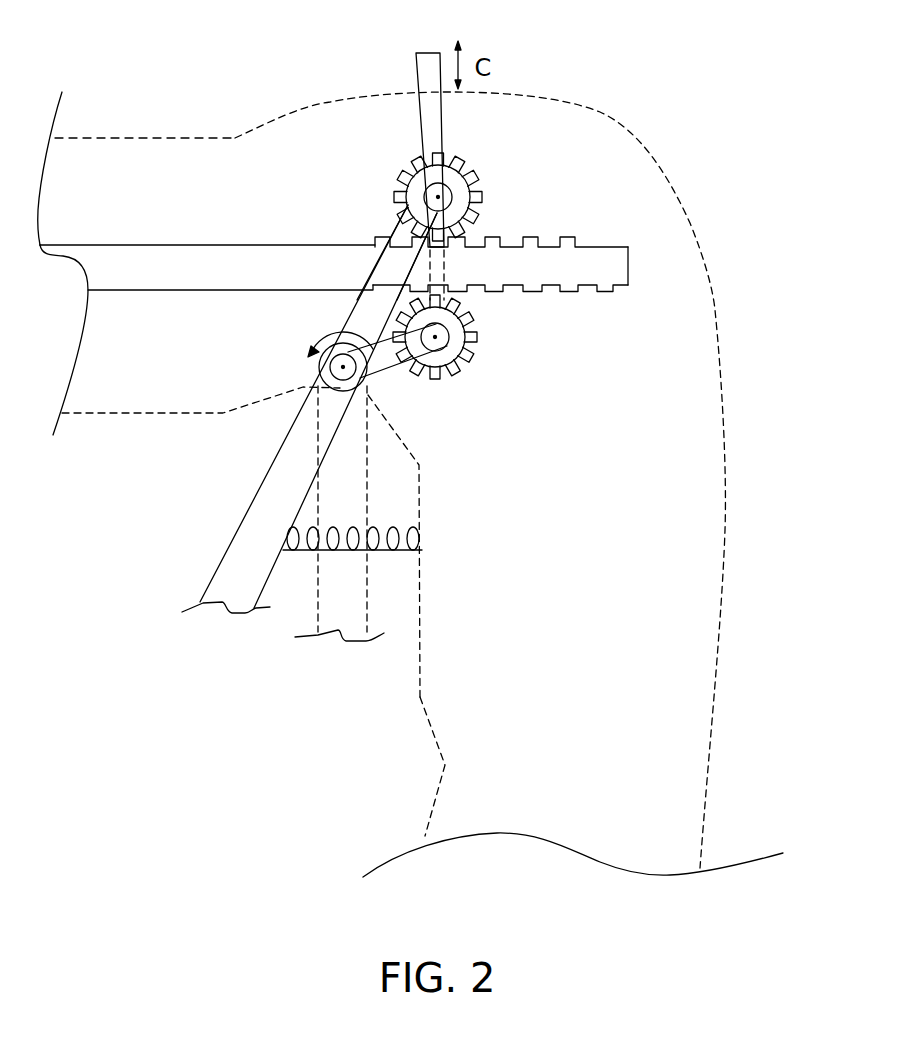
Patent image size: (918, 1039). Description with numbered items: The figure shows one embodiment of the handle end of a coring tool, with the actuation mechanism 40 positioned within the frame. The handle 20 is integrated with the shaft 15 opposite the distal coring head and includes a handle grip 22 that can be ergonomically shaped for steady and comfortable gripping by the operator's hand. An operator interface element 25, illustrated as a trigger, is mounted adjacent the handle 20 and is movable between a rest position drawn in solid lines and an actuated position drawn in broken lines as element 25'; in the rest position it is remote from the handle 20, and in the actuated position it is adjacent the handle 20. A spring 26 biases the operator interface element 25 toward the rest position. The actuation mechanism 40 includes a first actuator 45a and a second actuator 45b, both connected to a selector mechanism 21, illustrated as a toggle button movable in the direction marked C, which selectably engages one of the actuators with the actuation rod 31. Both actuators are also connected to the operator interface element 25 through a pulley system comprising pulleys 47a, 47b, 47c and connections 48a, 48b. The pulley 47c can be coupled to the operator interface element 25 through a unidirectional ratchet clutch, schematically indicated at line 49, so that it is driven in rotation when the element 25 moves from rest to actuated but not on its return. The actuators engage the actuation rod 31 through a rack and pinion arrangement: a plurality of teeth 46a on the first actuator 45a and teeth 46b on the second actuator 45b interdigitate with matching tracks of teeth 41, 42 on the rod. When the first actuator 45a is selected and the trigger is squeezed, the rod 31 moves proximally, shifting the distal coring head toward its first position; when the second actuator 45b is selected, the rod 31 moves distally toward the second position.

The shaft 15 is at (87, 157).
The handle 20 is at (726, 602).
The selector mechanism 21 is at (415, 74).
The handle grip 22 is at (445, 768).
The operator interface element 25 is at (259, 409).
The operator interface element in actuated position 25' is at (289, 548).
The spring 26 is at (420, 550).
The actuation rod 31 is at (165, 244).
The actuation mechanism 40 is at (641, 228).
The track of teeth 41 is at (573, 237).
The track of teeth 42 is at (586, 294).
The first actuator 45a is at (395, 178).
The second actuator 45b is at (484, 340).
The teeth 46a is at (483, 197).
The teeth 46b is at (468, 352).
The pulley 47a is at (458, 180).
The pulley 47b is at (477, 372).
The pulley 47c is at (328, 390).
The pulley system connection 48a is at (360, 313).
The pulley system connection 48b is at (387, 368).
The ratchet clutch 49 is at (312, 332).